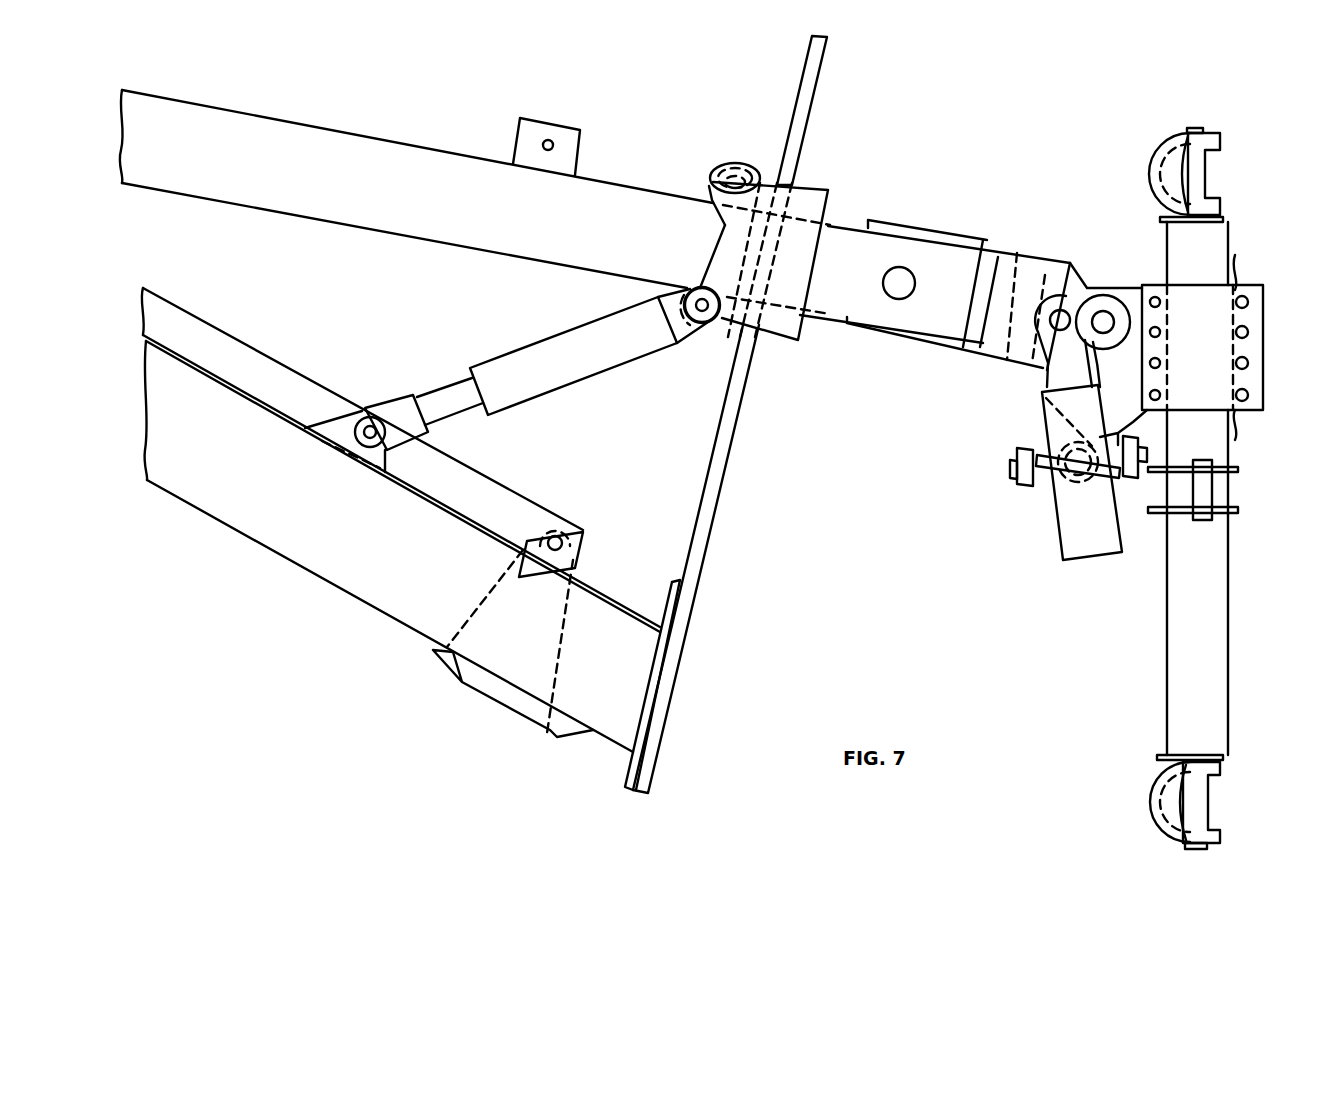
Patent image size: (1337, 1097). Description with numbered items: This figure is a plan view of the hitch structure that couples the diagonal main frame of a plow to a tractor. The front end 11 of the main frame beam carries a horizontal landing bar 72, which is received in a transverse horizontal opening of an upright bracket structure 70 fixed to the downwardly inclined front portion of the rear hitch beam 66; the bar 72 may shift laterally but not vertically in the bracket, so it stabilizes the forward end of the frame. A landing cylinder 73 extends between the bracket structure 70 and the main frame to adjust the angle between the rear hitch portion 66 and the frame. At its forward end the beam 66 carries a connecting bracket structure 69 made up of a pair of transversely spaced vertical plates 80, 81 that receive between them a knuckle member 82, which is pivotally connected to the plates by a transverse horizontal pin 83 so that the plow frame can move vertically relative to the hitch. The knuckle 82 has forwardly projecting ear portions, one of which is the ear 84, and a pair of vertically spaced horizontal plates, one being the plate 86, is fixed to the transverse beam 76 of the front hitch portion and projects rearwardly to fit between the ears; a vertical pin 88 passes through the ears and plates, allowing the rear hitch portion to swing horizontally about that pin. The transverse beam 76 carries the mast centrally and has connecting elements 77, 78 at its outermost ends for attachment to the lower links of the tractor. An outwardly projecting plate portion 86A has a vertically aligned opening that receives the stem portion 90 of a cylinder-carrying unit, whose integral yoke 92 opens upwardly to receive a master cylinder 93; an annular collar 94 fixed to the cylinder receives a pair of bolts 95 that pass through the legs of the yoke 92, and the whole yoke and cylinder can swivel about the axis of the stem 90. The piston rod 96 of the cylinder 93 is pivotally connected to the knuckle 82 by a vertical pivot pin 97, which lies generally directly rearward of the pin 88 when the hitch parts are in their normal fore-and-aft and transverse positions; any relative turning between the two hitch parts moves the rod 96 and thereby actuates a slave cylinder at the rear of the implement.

The front end 11 is at (598, 605).
The rear portion 66 is at (601, 200).
The connecting bracket structure 69 is at (971, 276).
The upright bracket structure 70 is at (826, 190).
The landing bar 72 is at (707, 520).
The landing cylinder 73 is at (582, 360).
The transverse beam 76 is at (1199, 488).
The connecting element 77 is at (1196, 182).
The connecting element 78 is at (1185, 803).
The vertical plate 80 is at (975, 352).
The vertical plate 81 is at (993, 243).
The knuckle member 82 is at (1017, 270).
The transverse horizontal pin 83 is at (1045, 275).
The ear portion 84 is at (1091, 282).
The horizontal plate 86 is at (1181, 346).
The outwardly projecting plate portion 86A is at (1120, 428).
The vertical pin 88 is at (1104, 320).
The stem portion 90 is at (1040, 484).
The yoke 92 is at (1020, 470).
The cylinder 93 is at (1068, 555).
The annular collar 94 is at (1048, 480).
The bolts 95 is at (1010, 478).
The piston rod 96 is at (1055, 372).
The vertical pivot pin 97 is at (1063, 316).